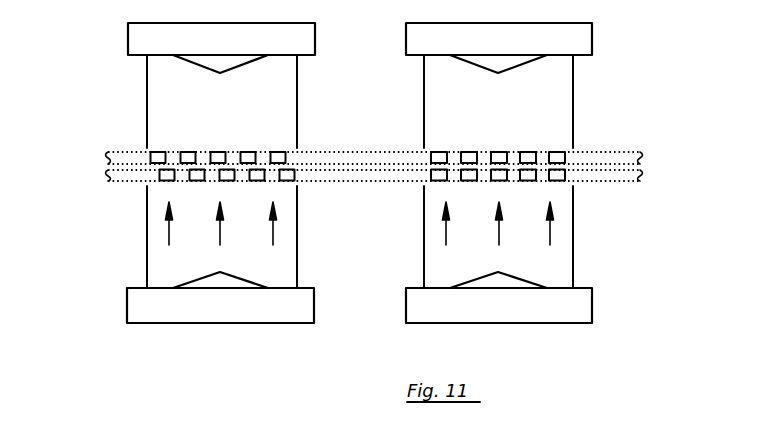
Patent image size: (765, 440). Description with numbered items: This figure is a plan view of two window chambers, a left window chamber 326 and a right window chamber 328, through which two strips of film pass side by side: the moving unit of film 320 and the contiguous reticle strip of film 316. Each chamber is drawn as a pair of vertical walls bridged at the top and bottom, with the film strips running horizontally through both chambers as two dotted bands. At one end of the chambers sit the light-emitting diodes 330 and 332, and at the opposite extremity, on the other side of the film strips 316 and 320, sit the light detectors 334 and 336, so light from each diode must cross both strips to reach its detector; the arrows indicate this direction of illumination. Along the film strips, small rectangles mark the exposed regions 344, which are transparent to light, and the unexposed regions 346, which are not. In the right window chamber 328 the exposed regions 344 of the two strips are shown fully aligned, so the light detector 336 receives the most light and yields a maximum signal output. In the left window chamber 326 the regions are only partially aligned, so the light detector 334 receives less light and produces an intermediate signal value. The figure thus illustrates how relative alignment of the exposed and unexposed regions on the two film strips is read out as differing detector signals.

The reticle strip of film 316 is at (612, 177).
The moving unit of film 320 is at (590, 152).
The left window chamber 326 is at (160, 251).
The right window chamber 328 is at (562, 250).
The light-emitting diode 330 is at (140, 305).
The light-emitting diode 332 is at (580, 303).
The light detector 334 is at (140, 40).
The light detector 336 is at (580, 40).
The exposed regions 344 is at (217, 153).
The unexposed regions 346 is at (483, 155).